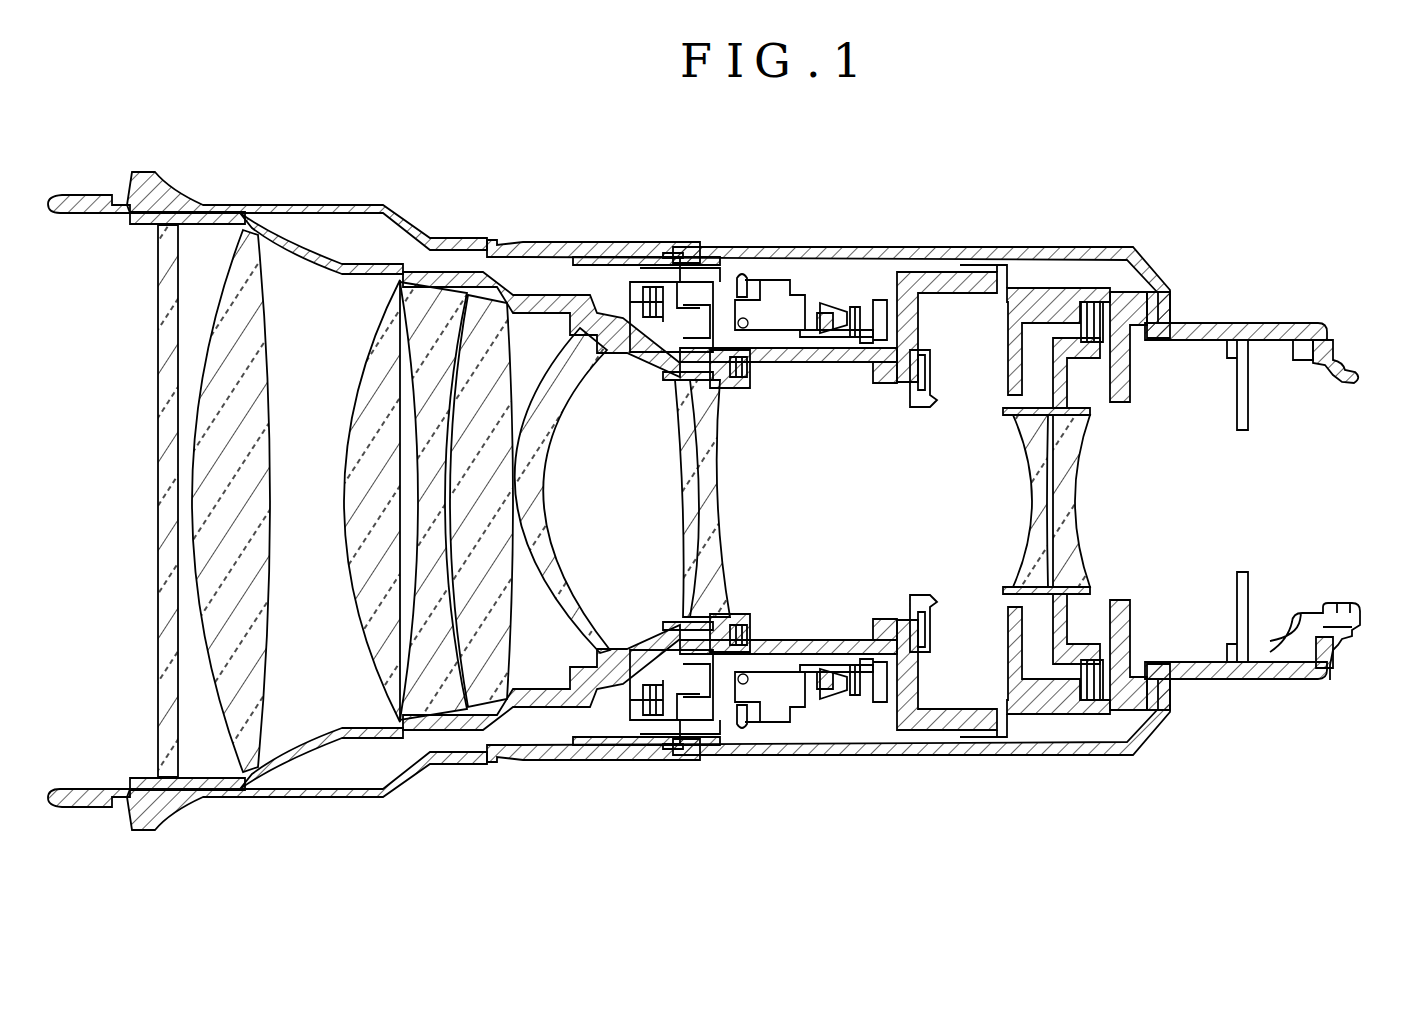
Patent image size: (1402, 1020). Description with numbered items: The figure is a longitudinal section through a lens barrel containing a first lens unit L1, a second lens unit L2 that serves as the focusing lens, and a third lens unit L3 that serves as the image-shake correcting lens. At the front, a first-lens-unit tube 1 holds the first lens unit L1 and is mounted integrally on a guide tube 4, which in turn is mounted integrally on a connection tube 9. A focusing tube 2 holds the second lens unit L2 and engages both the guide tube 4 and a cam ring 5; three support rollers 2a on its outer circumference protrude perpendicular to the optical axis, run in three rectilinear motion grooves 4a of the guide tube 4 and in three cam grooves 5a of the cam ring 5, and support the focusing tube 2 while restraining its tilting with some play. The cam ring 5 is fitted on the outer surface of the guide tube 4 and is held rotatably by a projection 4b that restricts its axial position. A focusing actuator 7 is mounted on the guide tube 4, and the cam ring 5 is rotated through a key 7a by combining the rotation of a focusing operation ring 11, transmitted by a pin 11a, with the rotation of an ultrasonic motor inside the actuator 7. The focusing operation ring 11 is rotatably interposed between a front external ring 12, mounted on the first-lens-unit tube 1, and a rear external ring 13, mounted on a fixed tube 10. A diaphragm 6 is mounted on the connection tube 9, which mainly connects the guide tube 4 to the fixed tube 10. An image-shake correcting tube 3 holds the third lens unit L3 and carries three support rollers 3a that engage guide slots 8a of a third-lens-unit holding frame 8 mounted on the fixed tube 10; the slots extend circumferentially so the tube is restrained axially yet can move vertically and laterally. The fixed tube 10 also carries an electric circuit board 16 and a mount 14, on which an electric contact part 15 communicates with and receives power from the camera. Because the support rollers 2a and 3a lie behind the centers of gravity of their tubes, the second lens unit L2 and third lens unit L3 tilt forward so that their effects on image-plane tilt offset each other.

The first-lens-unit tube 1 is at (243, 207).
The focusing tube 2 is at (792, 280).
The support rollers 2a is at (734, 357).
The image-shake correcting tube 3 is at (1035, 300).
The support rollers 3a is at (1092, 303).
The guide tube 4 is at (588, 300).
The rectilinear motion grooves 4a is at (870, 318).
The projection 4b is at (915, 330).
The cam ring 5 is at (845, 300).
The cam grooves 5a is at (736, 648).
The diaphragm 6 is at (917, 653).
The focusing actuator 7 is at (785, 292).
The key 7a is at (645, 283).
The third-lens-unit holding frame 8 is at (1128, 293).
The guide slots 8a is at (1090, 700).
The connection tube 9 is at (990, 722).
The fixed tube 10 is at (1212, 325).
The focusing operation ring 11 is at (510, 243).
The pin 11a is at (680, 248).
The front external ring 12 is at (168, 192).
The rear external ring 13 is at (1172, 300).
The mount 14 is at (1340, 350).
The electric contact part 15 is at (1362, 620).
The electric circuit board 16 is at (1250, 375).
The first lens unit L1 is at (572, 467).
The second lens unit L2 is at (692, 440).
The third lens unit L3 is at (1010, 418).